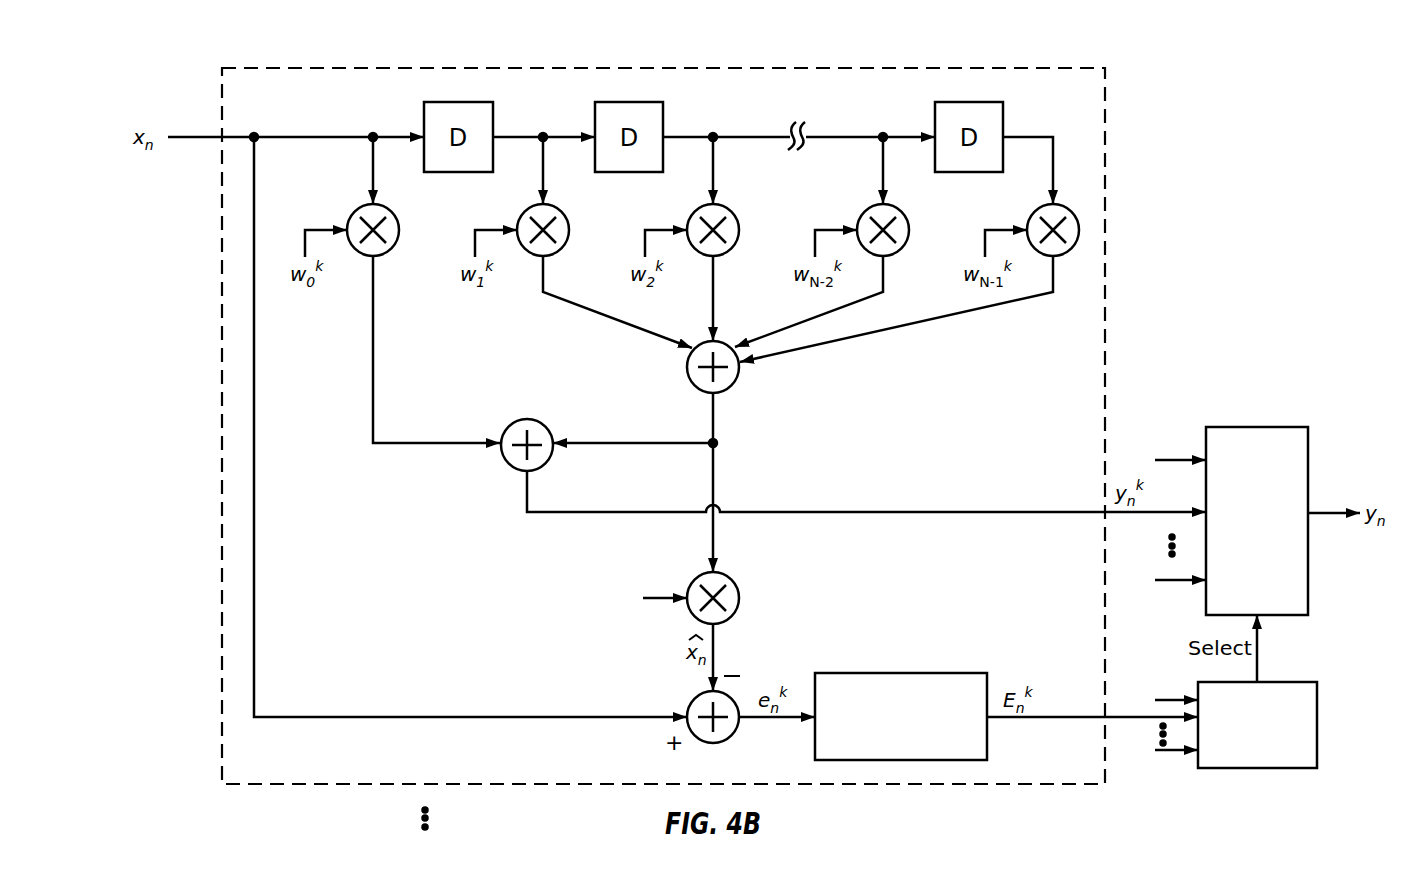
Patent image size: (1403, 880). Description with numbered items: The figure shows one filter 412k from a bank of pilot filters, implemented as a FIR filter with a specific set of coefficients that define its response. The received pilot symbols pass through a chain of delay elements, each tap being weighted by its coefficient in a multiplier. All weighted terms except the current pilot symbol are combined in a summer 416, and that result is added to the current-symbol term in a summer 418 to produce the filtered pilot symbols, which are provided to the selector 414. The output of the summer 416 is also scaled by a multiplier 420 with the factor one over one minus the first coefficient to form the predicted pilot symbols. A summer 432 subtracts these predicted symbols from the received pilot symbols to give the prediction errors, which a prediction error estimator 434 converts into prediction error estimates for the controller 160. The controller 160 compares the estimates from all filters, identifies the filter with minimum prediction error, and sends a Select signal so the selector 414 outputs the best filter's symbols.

The filter 412k is at (742, 68).
The selector 414 is at (1253, 427).
The summer 416 is at (697, 389).
The summer 418 is at (525, 420).
The multiplier 420 is at (734, 578).
The summer 432 is at (733, 733).
The prediction error estimator 434 is at (897, 673).
The controller 160 is at (1287, 682).